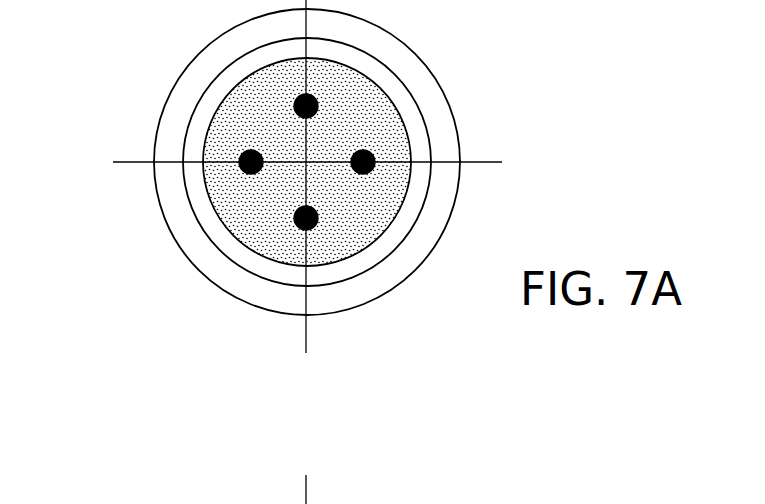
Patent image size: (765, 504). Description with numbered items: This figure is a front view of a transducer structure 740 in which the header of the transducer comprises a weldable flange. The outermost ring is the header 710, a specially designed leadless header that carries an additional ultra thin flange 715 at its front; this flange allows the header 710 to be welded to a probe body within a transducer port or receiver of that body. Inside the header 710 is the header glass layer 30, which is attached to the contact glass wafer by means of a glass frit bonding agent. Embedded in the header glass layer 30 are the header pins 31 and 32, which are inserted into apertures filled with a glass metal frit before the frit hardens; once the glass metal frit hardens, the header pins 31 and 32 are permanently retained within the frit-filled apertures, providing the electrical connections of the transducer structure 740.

The weldable flange 715 is at (195, 72).
The header 710 is at (160, 217).
The transducer structure 740 is at (177, 247).
The header glass layer 30 is at (370, 115).
The header pin 31 is at (318, 100).
The header pin 32 is at (375, 164).